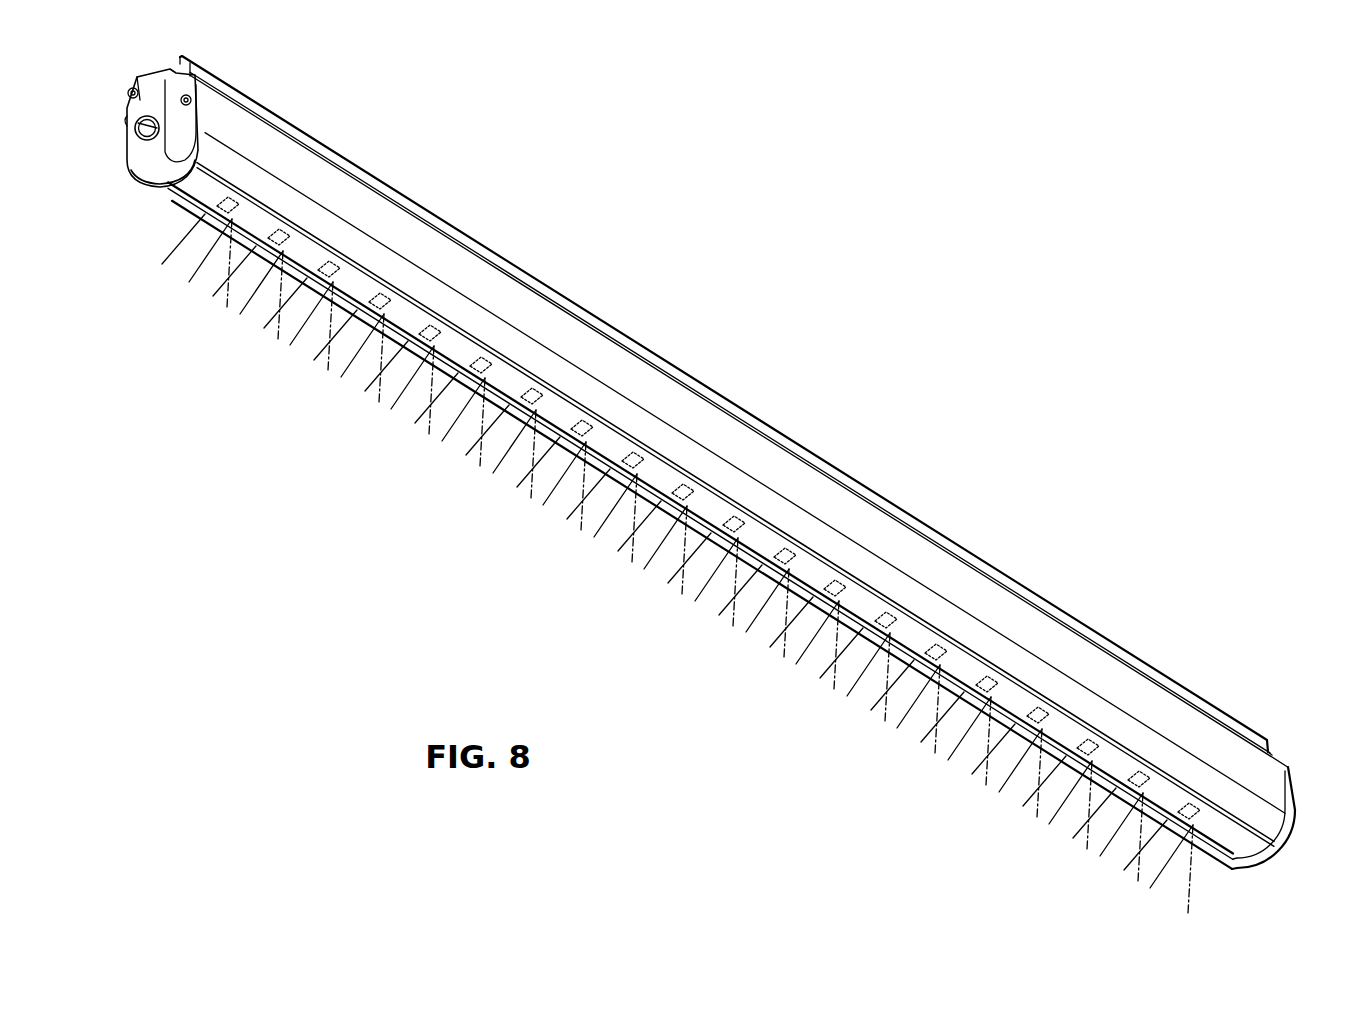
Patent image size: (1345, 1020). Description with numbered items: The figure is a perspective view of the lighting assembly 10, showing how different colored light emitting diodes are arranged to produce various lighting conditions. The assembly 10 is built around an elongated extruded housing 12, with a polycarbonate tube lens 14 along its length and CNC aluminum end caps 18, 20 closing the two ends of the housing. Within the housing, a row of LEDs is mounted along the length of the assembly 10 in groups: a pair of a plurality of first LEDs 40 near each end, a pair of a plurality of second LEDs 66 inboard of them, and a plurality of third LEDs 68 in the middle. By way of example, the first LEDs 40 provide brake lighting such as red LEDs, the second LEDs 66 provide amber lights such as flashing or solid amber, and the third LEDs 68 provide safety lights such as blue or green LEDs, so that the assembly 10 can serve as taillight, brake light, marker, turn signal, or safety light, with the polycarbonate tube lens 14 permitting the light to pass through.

The assembly 10 is at (980, 287).
The extruded housing 12 is at (276, 98).
The polycarbonate tube lens 14 is at (1256, 846).
The first CNC aluminum end cap 18 is at (1253, 872).
The second CNC aluminum end cap 20 is at (120, 188).
The first LEDs 40 is at (380, 292).
The second LEDs 66 is at (582, 419).
The third LEDs 68 is at (785, 547).